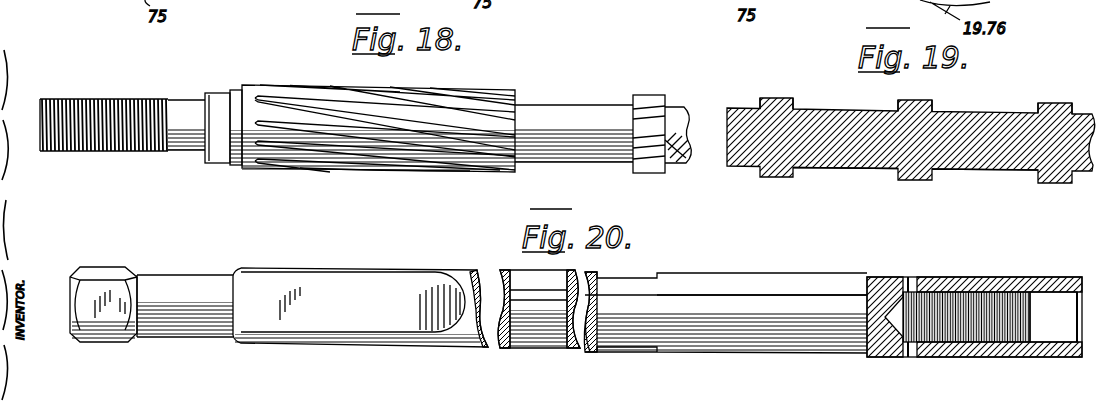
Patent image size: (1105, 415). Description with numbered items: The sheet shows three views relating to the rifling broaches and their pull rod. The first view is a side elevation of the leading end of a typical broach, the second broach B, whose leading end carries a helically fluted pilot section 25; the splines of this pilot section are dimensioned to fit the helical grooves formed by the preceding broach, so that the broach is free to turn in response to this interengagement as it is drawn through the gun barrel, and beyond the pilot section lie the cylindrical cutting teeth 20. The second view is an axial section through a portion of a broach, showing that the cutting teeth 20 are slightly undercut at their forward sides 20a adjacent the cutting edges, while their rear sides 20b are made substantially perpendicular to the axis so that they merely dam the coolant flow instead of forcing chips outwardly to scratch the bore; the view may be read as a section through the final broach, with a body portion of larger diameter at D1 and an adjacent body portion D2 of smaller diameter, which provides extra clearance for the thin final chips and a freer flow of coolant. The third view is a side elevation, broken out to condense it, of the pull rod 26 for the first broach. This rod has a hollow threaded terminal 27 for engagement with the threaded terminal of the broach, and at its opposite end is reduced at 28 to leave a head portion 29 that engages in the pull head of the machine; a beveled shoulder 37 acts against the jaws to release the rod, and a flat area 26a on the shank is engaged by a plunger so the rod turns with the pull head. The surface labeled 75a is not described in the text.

In FIG. 18, the helically fluted pilot section 25 is at (302, 98).
In FIG. 18, the second broach B is at (555, 110).
In FIG. 18, the cutting teeth 20 is at (652, 96).
In FIG. 19, the cutting teeth 20 is at (766, 178).
In FIG. 19, the forward sides of the cutting teeth 20a is at (759, 101).
In FIG. 19, the rear sides of the cutting teeth 20b is at (812, 78).
In FIG. 19, the body portion of larger diameter D1 is at (852, 168).
In FIG. 19, the body portion of smaller diameter D2 is at (986, 170).
In FIG. 20, the head portion 29 is at (96, 268).
In FIG. 20, the beveled shoulder 37 is at (136, 270).
In FIG. 20, the reduced portion 28 is at (182, 280).
In FIG. 20, the flat area 26a is at (375, 300).
In FIG. 20, the pull rod 26 is at (733, 289).
In FIG. 20, the flat face 75a is at (795, 300).
In FIG. 20, the hollow threaded terminal 27 is at (975, 306).